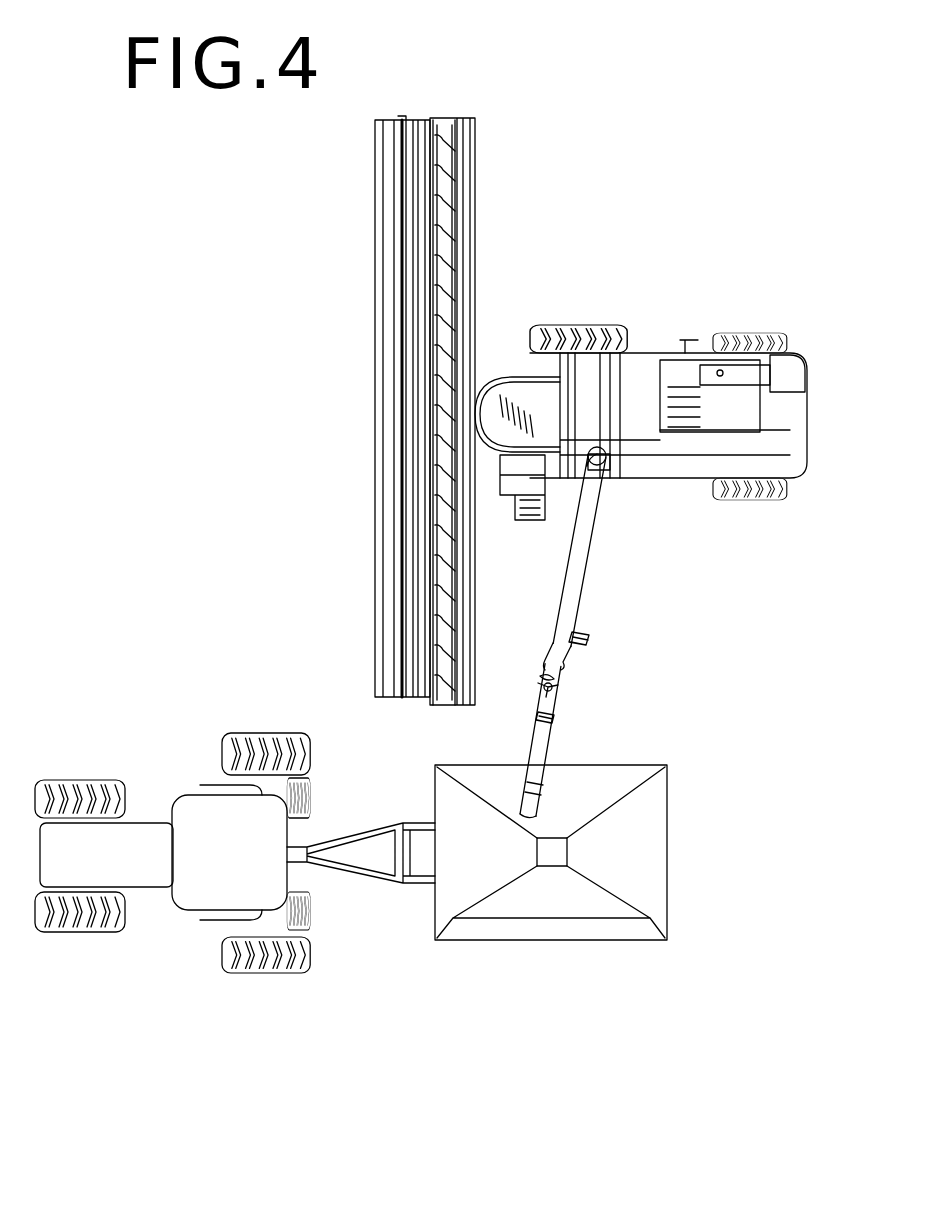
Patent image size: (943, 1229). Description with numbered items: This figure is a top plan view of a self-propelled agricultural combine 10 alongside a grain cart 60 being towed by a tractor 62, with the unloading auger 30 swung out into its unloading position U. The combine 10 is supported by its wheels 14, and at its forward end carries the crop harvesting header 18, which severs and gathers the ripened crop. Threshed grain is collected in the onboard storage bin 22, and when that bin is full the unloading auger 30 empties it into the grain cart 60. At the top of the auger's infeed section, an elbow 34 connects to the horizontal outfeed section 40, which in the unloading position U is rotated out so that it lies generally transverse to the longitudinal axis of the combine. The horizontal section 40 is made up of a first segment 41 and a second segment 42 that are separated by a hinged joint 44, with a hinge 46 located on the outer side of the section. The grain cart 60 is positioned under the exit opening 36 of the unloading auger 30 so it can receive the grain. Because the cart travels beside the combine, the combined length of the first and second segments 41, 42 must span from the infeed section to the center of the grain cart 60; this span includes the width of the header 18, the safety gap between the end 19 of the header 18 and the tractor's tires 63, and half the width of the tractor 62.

The self-propelled agricultural combine 10 is at (641, 359).
The wheels 14 is at (578, 325).
The crop harvesting header 18 is at (372, 339).
The end of the header 19 is at (430, 708).
The onboard storage bin 22 is at (643, 372).
The unloading auger 30 is at (576, 649).
The elbow 34 is at (620, 472).
The exit opening 36 is at (525, 828).
The horizontal outfeed section 40 is at (565, 670).
The first segment 41 is at (590, 574).
The second segment 42 is at (558, 750).
The hinged joint 44 is at (570, 687).
The hinge 46 is at (538, 680).
The grain cart 60 is at (525, 945).
The tractor 62 is at (235, 843).
The tractor's tires 63 is at (290, 728).
The unloading position u is at (665, 725).